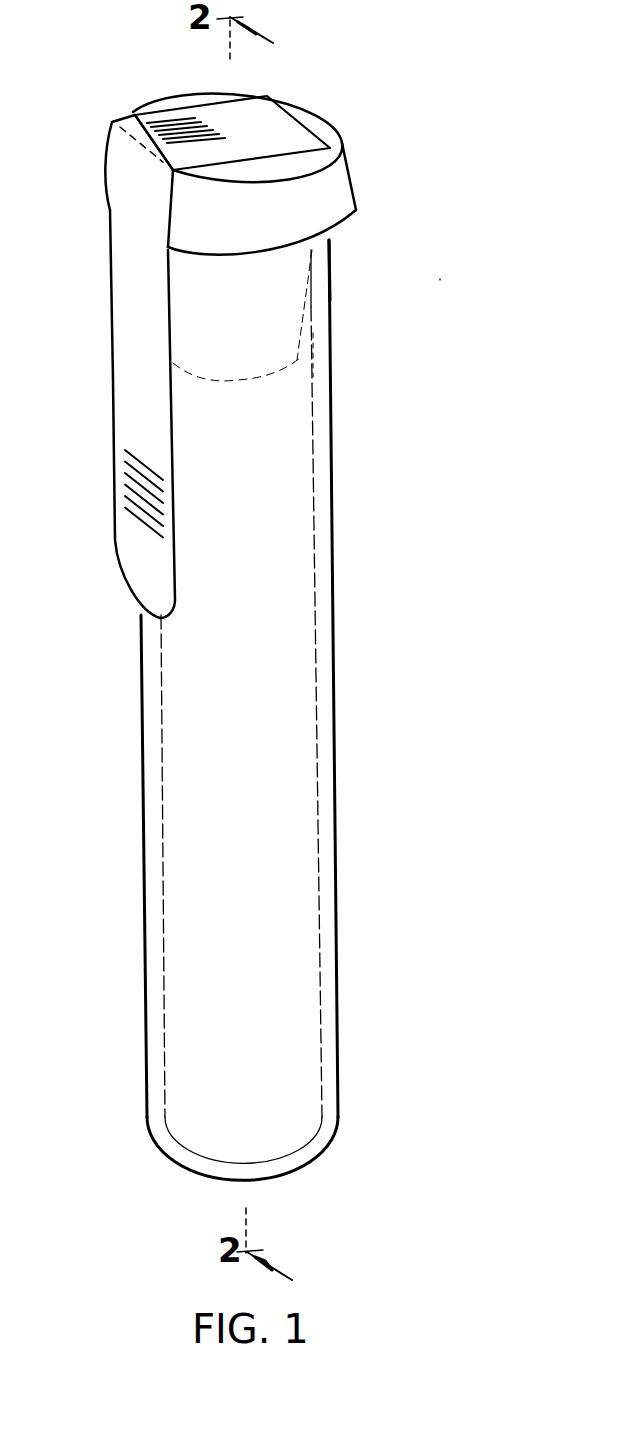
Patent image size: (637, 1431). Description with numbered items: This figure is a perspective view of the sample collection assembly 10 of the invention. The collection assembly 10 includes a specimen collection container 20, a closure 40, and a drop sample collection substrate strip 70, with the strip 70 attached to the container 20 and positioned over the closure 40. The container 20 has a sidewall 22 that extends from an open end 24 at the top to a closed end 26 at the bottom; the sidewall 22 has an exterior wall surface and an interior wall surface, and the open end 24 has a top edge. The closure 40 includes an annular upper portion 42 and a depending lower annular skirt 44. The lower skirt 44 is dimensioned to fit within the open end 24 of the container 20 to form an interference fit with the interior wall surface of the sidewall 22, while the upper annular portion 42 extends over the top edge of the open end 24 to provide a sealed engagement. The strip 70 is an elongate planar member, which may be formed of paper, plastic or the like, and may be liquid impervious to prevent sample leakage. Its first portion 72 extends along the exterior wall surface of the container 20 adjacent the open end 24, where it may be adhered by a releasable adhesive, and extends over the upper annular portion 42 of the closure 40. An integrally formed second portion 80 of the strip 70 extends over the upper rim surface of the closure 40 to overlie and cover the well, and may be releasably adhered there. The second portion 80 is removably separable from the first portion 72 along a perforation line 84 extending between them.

The sample collection assembly 10 is at (438, 281).
The specimen collection container 20 is at (290, 700).
The sidewall 22 is at (157, 953).
The open end 24 is at (323, 247).
The closed end 26 is at (313, 1147).
The closure 40 is at (327, 198).
The annular upper portion 42 is at (343, 141).
The lower annular skirt 44 is at (275, 353).
The drop sample collection substrate strip 70 is at (112, 187).
The first portion 72 is at (123, 413).
The second portion 80 is at (268, 96).
The perforation line 84 is at (133, 137).